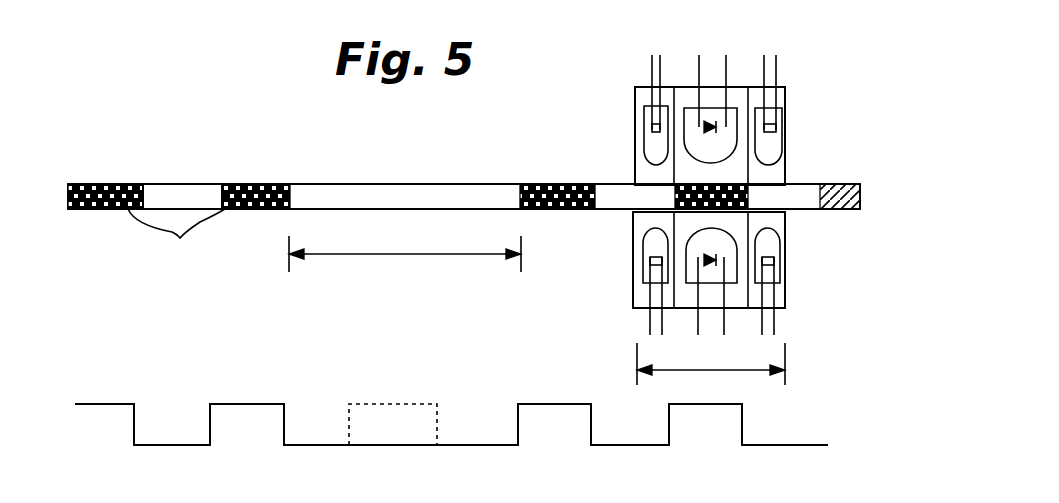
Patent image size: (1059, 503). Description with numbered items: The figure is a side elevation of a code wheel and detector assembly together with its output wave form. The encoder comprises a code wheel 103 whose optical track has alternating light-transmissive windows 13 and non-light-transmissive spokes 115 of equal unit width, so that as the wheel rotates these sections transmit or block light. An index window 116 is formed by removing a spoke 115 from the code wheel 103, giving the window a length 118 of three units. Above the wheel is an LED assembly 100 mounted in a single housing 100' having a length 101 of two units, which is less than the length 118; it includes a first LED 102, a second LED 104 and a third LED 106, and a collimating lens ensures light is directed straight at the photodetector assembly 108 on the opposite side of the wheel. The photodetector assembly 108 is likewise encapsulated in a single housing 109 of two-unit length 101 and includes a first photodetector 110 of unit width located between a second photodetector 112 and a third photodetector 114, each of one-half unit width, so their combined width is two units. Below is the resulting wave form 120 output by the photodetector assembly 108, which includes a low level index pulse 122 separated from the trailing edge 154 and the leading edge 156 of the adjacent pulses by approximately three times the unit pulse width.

The window 13 is at (190, 180).
The LED assembly 100 is at (734, 108).
The housing 100' is at (822, 153).
The length 101 is at (745, 372).
The first LED 102 is at (698, 120).
The code wheel 103 is at (124, 240).
The second LED 104 is at (657, 150).
The third LED 106 is at (772, 128).
The photodetector assembly 108 is at (719, 276).
The housing 109 is at (778, 281).
The first photodetector 110 is at (710, 268).
The second photodetector 112 is at (650, 246).
The third photodetector 114 is at (772, 262).
The spoke 115 is at (176, 238).
The index window 116 is at (392, 195).
The length 118 is at (387, 262).
The wave form 120 is at (88, 405).
The index pulse 122 is at (325, 458).
The trailing edge 154 is at (288, 418).
The leading edge 156 is at (518, 418).